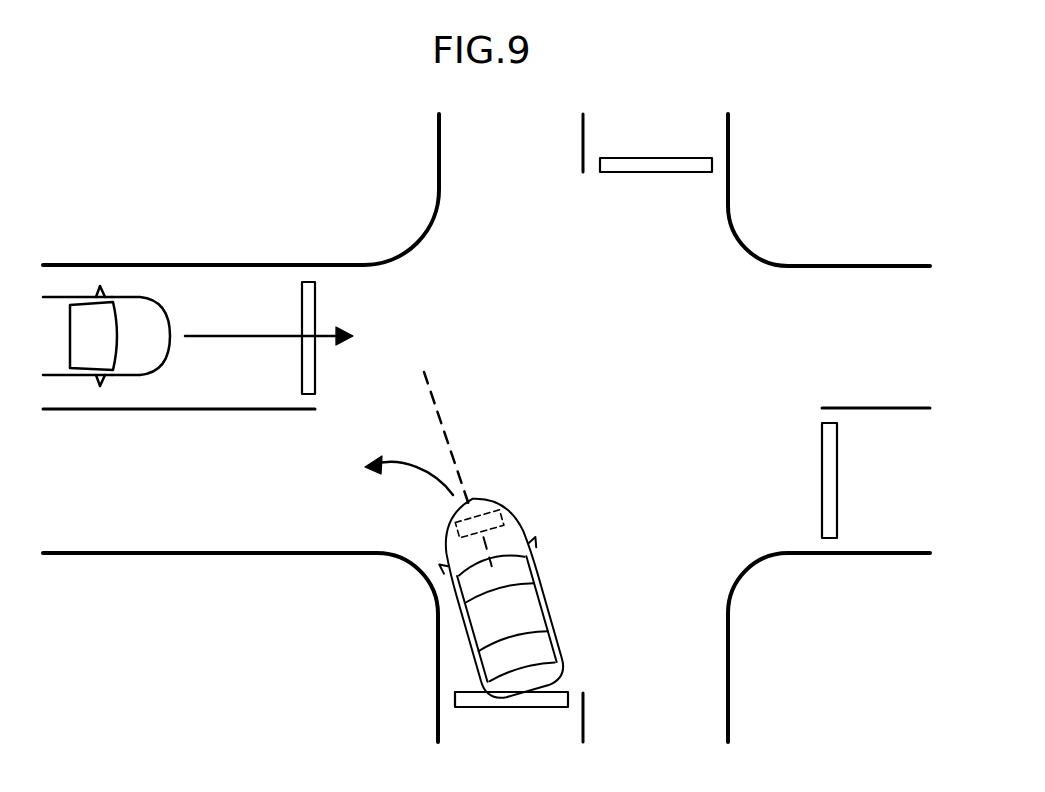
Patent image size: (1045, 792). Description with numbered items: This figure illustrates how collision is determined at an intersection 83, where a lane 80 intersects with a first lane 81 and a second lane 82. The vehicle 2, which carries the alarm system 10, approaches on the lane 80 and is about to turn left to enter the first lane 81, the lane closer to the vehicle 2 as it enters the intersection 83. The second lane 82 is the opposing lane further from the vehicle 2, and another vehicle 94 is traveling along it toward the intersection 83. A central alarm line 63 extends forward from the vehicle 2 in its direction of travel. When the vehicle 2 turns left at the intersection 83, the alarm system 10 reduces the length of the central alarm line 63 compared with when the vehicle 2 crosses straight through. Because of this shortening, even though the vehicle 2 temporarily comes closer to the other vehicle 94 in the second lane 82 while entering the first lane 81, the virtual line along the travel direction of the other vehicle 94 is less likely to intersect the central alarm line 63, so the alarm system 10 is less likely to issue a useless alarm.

The vehicle 2 is at (470, 640).
The alarm system 10 is at (475, 580).
The central alarm line 63 is at (455, 437).
The lane 80 is at (467, 730).
The first lane 81 is at (60, 530).
The second lane 82 is at (58, 283).
The intersection 83 is at (642, 358).
The other vehicle 94 is at (137, 293).